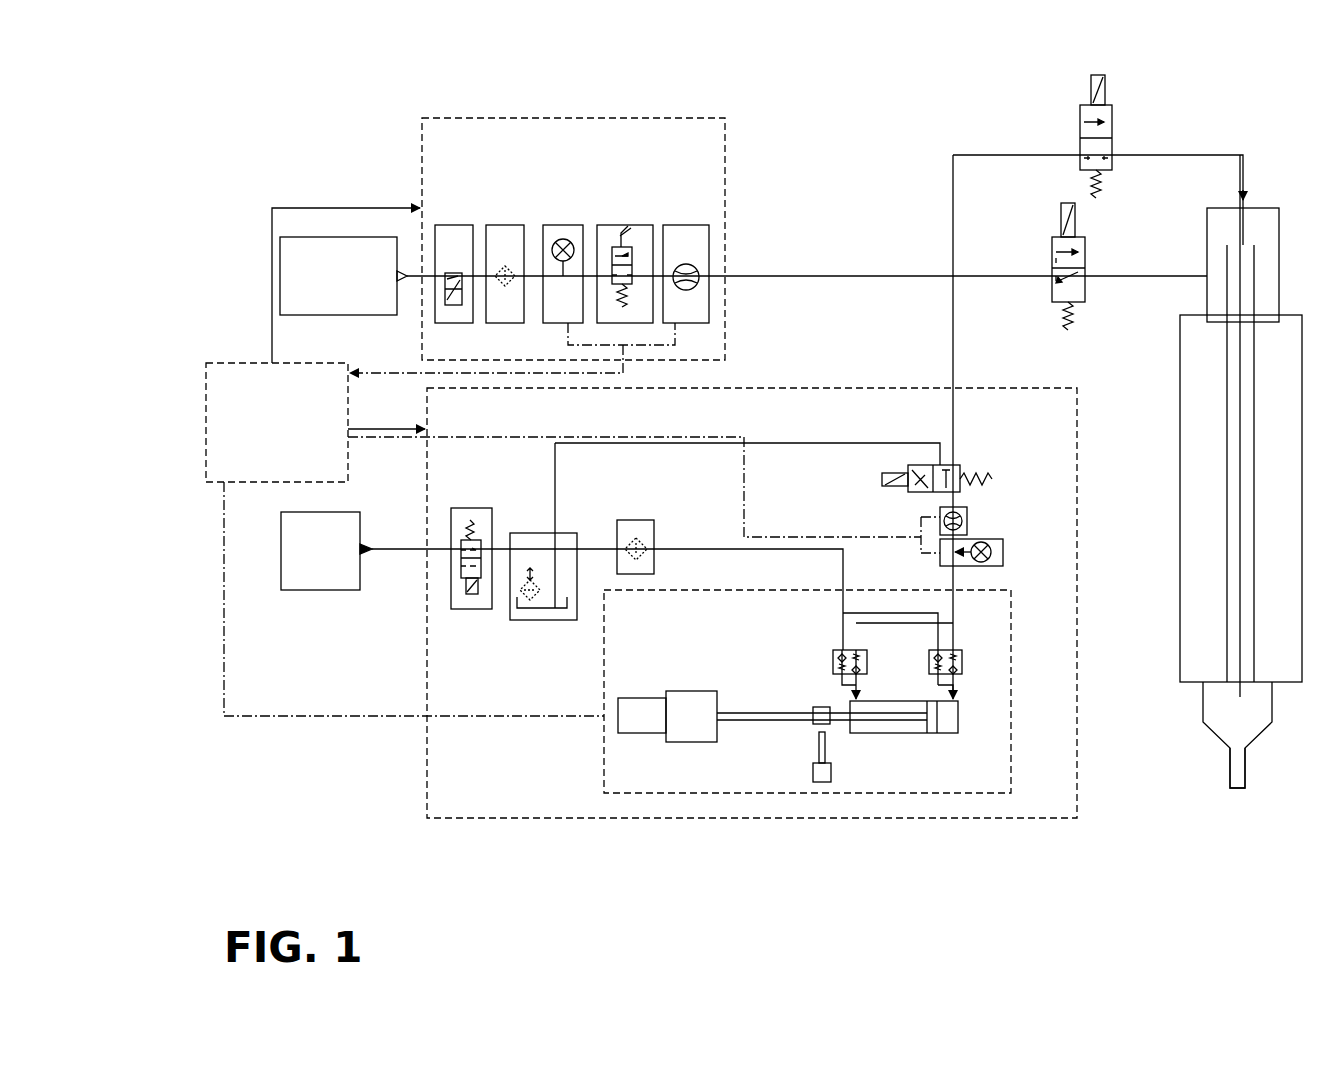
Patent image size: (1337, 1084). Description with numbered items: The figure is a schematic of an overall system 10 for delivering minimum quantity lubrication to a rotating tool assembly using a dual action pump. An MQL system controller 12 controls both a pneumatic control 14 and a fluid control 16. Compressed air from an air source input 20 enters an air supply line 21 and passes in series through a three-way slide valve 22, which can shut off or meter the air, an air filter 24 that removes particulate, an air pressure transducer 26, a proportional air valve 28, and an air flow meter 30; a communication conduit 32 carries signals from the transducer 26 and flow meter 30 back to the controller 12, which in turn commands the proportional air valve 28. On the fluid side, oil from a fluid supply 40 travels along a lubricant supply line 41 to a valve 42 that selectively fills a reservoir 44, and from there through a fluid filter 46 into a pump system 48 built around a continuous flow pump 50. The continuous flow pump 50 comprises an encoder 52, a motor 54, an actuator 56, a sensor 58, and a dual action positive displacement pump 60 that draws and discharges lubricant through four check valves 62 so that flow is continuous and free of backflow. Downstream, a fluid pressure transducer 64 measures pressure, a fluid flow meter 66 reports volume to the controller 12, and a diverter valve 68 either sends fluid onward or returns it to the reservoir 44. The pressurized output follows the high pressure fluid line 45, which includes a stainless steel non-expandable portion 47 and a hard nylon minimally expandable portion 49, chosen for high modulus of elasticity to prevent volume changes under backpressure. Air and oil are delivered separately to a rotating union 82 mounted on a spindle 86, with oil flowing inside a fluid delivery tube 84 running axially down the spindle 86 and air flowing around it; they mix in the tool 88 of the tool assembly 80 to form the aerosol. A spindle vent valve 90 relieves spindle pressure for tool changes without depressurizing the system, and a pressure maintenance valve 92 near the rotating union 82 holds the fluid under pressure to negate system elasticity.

The overall system schematic 10 is at (286, 102).
The MQL system controller 12 is at (238, 362).
The pneumatic control 14 is at (540, 118).
The fluid control 16 is at (427, 665).
The air source input 20 is at (328, 315).
The air supply line 21 is at (890, 276).
The three-way slide valve 22 is at (453, 225).
The air filter 24 is at (505, 225).
The air pressure transducer 26 is at (563, 225).
The proportional air valve 28 is at (621, 225).
The air flow meter 30 is at (684, 225).
The communication conduit 32 is at (675, 333).
The fluid supply 40 is at (292, 590).
The lubricant supply line 41 is at (375, 549).
The valve 42 is at (462, 508).
The reservoir 44 is at (535, 620).
The high pressure fluid line 45 is at (1005, 155).
The fluid filter 46 is at (633, 520).
The non-expandable portion 47 is at (960, 574).
The pump system 48 is at (604, 668).
The minimally expandable portion 49 is at (1209, 148).
The continuous flow pump 50 is at (745, 756).
The encoder 52 is at (647, 733).
The motor 54 is at (707, 742).
The actuator 56 is at (778, 710).
The sensor 58 is at (831, 766).
The positive displacement pump 60 is at (908, 733).
The check valves 62 is at (833, 660).
The fluid pressure transducer 64 is at (1003, 552).
The fluid flow meter 66 is at (967, 522).
The diverter valve 68 is at (882, 478).
The rotating tool assembly 80 is at (1180, 360).
The rotating union 82 is at (1207, 220).
The fluid delivery tube 84 is at (1236, 410).
The spindle 86 is at (1178, 487).
The tool 88 is at (1226, 765).
The spindle vent valve 90 is at (1052, 248).
The pressure maintenance valve 92 is at (1112, 132).